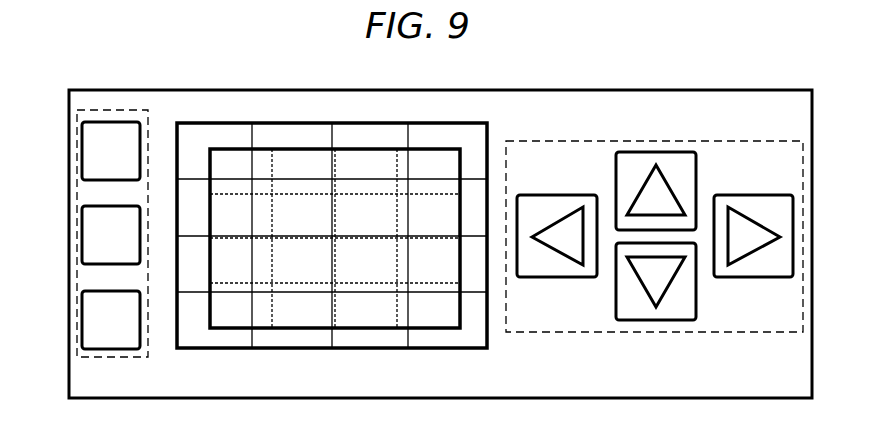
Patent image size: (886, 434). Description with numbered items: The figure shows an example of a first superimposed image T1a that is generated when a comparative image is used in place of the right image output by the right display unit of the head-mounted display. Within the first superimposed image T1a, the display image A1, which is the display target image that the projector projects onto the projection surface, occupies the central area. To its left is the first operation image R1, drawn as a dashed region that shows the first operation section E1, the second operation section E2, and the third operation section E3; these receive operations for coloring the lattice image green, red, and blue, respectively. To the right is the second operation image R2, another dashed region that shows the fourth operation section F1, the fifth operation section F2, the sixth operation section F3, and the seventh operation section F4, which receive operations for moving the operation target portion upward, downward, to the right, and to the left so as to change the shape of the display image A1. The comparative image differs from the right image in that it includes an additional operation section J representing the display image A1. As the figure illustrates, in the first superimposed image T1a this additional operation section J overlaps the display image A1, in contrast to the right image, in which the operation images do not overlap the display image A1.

The first superimposed image T1a is at (740, 90).
The first operation image R1 is at (104, 110).
The second operation image R2 is at (547, 140).
The first operation section E1 is at (82, 151).
The second operation section E2 is at (82, 237).
The third operation section E3 is at (82, 322).
The display image A1 is at (447, 349).
The additional operation section J is at (434, 148).
The fourth operation section F1 is at (657, 151).
The fifth operation section F2 is at (656, 321).
The sixth operation section F3 is at (760, 195).
The seventh operation section F4 is at (557, 195).